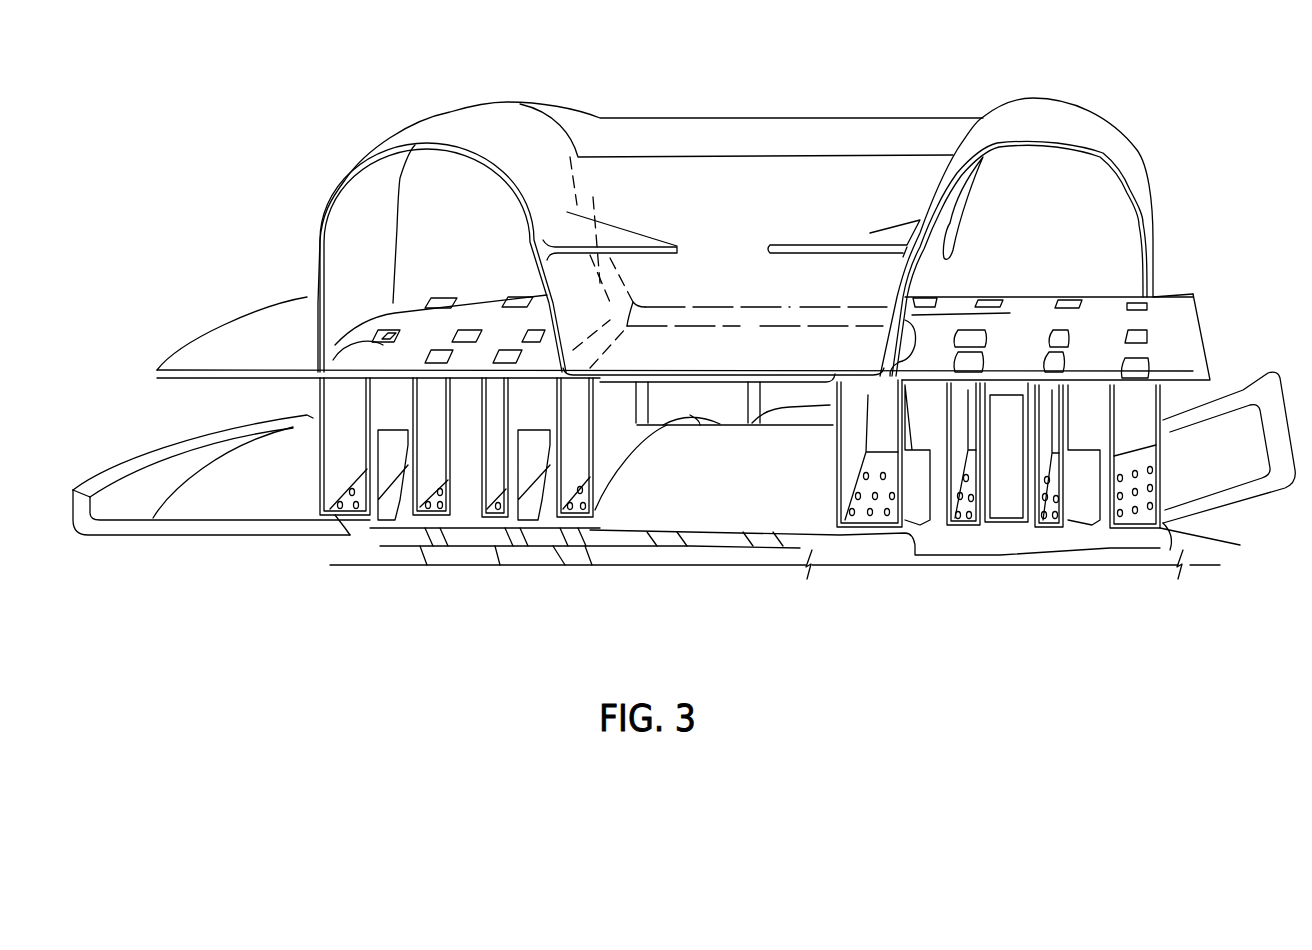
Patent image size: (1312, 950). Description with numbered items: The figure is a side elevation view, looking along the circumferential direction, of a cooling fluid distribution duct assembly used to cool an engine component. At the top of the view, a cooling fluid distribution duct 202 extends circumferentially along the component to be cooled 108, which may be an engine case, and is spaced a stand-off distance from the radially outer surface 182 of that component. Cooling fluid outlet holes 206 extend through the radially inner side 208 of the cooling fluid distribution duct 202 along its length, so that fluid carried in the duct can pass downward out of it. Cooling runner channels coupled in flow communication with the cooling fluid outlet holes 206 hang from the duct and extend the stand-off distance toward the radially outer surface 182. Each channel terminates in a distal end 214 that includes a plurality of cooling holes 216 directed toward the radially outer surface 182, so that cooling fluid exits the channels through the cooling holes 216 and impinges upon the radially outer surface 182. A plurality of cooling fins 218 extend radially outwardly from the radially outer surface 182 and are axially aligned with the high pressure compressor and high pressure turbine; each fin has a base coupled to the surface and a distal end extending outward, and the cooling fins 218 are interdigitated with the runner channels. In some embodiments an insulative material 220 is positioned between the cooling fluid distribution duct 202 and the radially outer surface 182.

The cooling fluid distribution duct 202 is at (480, 128).
The cooling fluid outlet hole 206 is at (390, 333).
The radially inner side 208 is at (522, 332).
The component to be cooled 108 is at (263, 530).
The radially outer surface 182 is at (300, 490).
The distal end 214 is at (335, 515).
The cooling holes 216 is at (1158, 603).
The cooling fins 218 is at (388, 440).
The insulative material 220 is at (1013, 520).